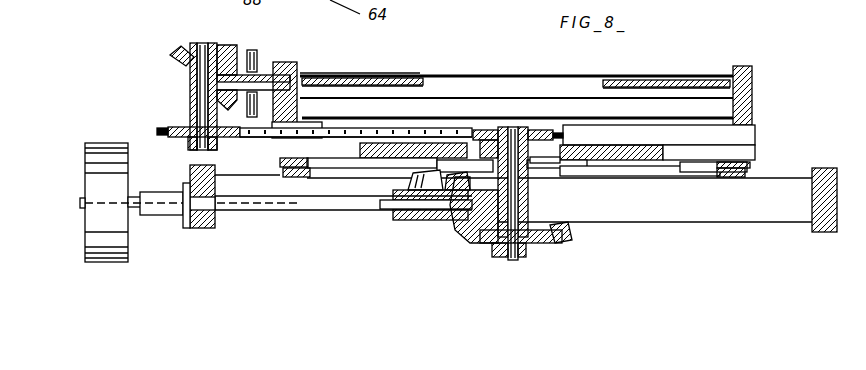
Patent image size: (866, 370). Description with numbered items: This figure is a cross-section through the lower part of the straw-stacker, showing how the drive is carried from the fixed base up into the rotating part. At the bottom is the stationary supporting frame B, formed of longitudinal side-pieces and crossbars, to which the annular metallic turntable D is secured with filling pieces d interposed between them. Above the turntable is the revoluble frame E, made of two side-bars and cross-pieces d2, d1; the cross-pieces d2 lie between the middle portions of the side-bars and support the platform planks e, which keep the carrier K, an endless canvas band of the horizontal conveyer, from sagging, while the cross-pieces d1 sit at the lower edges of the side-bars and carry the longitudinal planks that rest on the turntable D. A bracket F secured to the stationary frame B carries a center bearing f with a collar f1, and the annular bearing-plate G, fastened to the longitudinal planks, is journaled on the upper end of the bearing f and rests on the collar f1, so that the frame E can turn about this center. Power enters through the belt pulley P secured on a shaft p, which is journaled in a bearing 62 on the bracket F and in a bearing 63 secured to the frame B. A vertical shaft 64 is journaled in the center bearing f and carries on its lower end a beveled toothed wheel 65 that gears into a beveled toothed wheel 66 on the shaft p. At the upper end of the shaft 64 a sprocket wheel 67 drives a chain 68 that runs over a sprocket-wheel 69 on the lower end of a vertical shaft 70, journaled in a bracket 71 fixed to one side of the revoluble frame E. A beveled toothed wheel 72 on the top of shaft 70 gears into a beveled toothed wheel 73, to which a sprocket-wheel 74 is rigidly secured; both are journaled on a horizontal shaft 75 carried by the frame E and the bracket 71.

The bearing 62 is at (410, 217).
The bearing 63 is at (168, 212).
The vertical shaft 64 is at (513, 262).
The beveled toothed wheel 65 is at (562, 242).
The beveled toothed wheel 66 is at (457, 227).
The sprocket wheel 67 is at (528, 133).
The drive-chain 68 is at (408, 130).
The sprocket-wheel 69 is at (172, 127).
The vertical shaft 70 is at (200, 90).
The bracket 71 is at (195, 110).
The beveled toothed wheel 72 is at (178, 48).
The beveled toothed wheel 73 is at (238, 60).
The sprocket-wheel 74 is at (318, 38).
The horizontal shaft 75 is at (300, 73).
The revoluble frame E is at (332, 38).
The platform planks e is at (370, 75).
The carrier K is at (467, 73).
The annular bearing-plate G is at (562, 130).
The cross-pieces d2 is at (712, 93).
The cross-pieces d1 is at (730, 135).
The annular metallic turntable D is at (747, 162).
The filling pieces d is at (747, 172).
The stationary supporting frame B is at (205, 229).
The belt pulley P is at (103, 262).
The shaft p is at (313, 207).
The bracket F is at (408, 208).
The center bearing f is at (527, 193).
The collar f1 is at (543, 177).